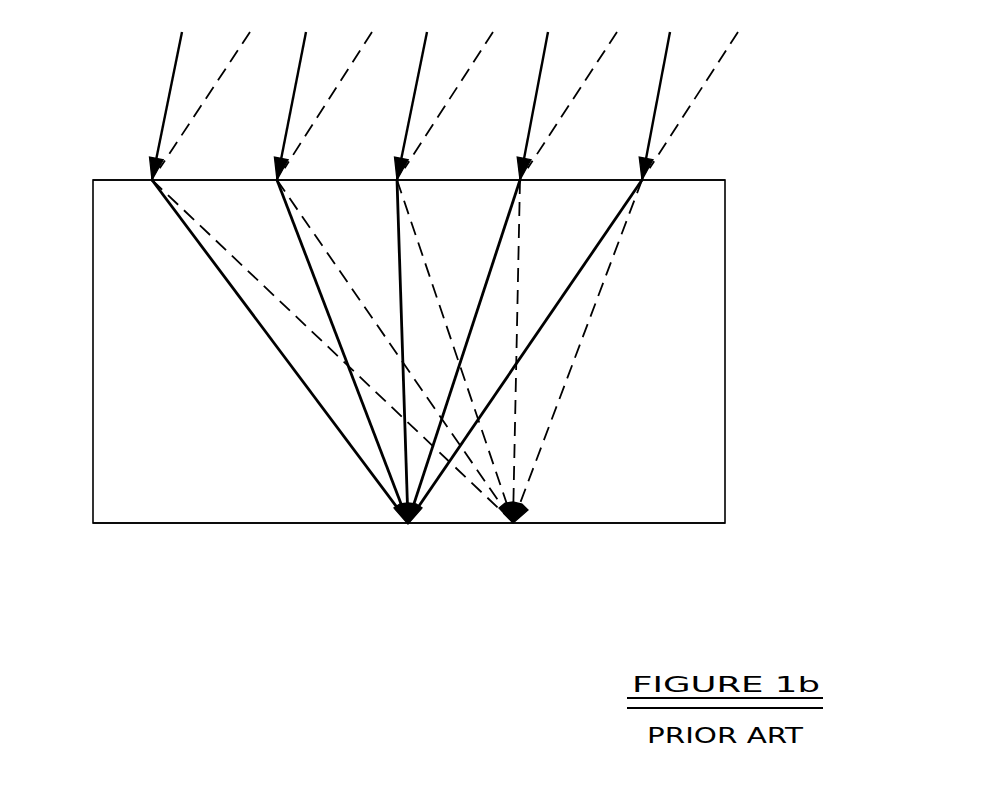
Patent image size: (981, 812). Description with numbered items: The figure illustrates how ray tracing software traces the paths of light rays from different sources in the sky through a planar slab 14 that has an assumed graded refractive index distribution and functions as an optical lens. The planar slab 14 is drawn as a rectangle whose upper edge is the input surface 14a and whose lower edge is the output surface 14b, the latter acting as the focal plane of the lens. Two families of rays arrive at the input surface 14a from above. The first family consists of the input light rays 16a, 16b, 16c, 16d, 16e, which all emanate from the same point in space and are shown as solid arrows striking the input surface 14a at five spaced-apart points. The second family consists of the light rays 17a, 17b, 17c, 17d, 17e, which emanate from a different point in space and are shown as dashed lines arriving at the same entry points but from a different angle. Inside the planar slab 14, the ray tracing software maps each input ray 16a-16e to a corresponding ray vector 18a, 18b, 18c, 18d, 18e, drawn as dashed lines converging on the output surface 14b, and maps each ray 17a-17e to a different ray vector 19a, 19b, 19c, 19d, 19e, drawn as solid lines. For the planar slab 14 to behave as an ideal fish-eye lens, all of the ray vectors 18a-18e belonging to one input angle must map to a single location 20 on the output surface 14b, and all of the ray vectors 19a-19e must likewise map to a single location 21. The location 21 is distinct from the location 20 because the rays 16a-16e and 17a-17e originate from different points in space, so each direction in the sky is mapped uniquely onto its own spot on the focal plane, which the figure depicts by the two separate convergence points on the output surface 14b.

The planar slab 14 is at (86, 318).
The input surface 14a is at (118, 178).
The output surface 14b is at (198, 524).
The input light ray 16a is at (175, 72).
The input light ray 16b is at (299, 72).
The input light ray 16c is at (420, 72).
The input light ray 16d is at (541, 72).
The input light ray 16e is at (663, 72).
The light ray 17a is at (209, 92).
The light ray 17b is at (333, 92).
The light ray 17c is at (455, 92).
The light ray 17d is at (579, 92).
The light ray 17e is at (700, 92).
The ray vector 18a is at (207, 233).
The ray vector 18b is at (328, 248).
The ray vector 18c is at (415, 230).
The ray vector 18d is at (519, 237).
The ray vector 18e is at (569, 366).
The ray vector 19a is at (204, 250).
The ray vector 19b is at (288, 222).
The ray vector 19c is at (397, 222).
The ray vector 19d is at (507, 220).
The ray vector 19e is at (592, 255).
The location 20 is at (512, 538).
The location 21 is at (408, 538).